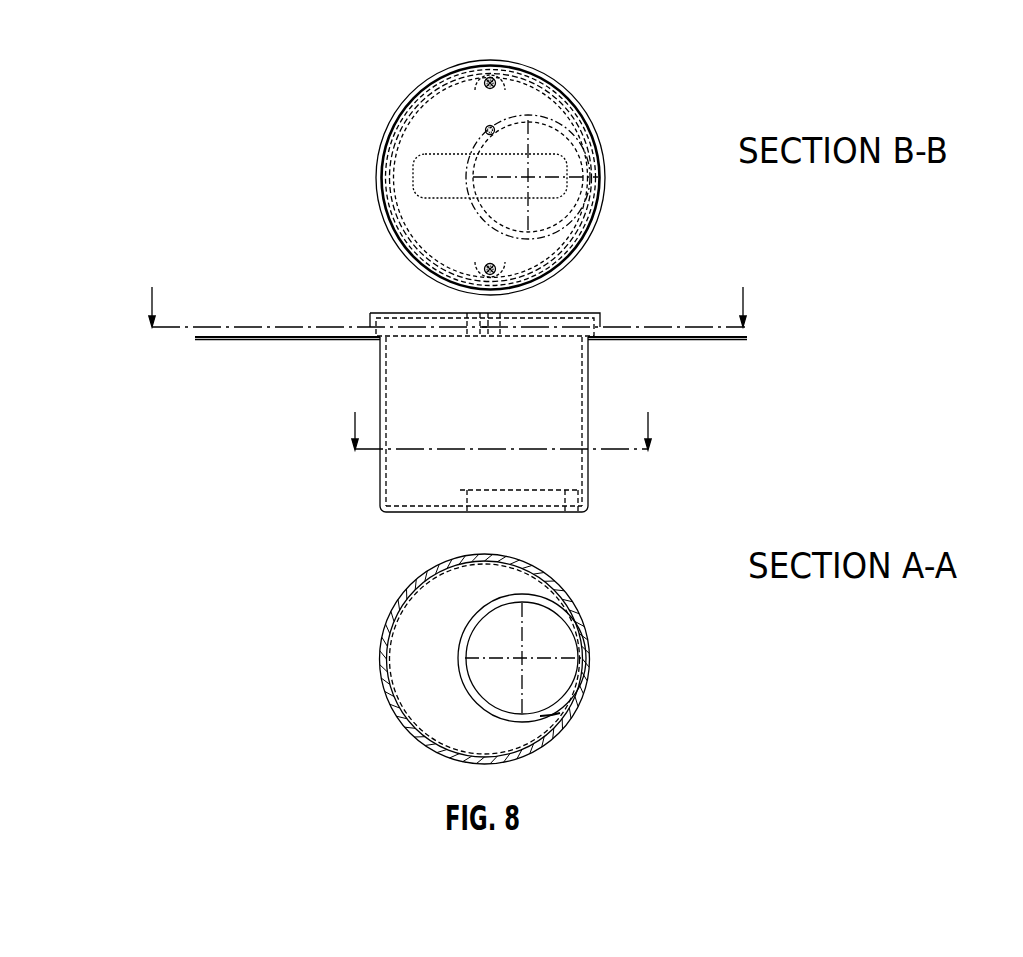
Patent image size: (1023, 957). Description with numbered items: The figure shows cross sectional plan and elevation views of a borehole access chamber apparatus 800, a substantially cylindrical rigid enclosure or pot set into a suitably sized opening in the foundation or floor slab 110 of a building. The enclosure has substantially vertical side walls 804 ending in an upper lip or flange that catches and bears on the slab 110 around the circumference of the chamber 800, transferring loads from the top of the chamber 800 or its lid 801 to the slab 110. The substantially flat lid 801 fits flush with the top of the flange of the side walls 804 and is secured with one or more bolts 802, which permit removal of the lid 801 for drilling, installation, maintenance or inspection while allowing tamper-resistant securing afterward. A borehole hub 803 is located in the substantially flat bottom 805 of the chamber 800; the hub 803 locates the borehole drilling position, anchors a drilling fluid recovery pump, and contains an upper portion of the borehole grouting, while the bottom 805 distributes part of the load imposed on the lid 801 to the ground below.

The foundation or floor slab 110 is at (749, 333).
The borehole access chamber apparatus 800 is at (298, 389).
The lid 801 is at (535, 251).
The bolts 802 is at (507, 84).
The borehole hub 803 is at (517, 116).
The side walls 804 is at (592, 397).
The bottom 805 is at (550, 717).